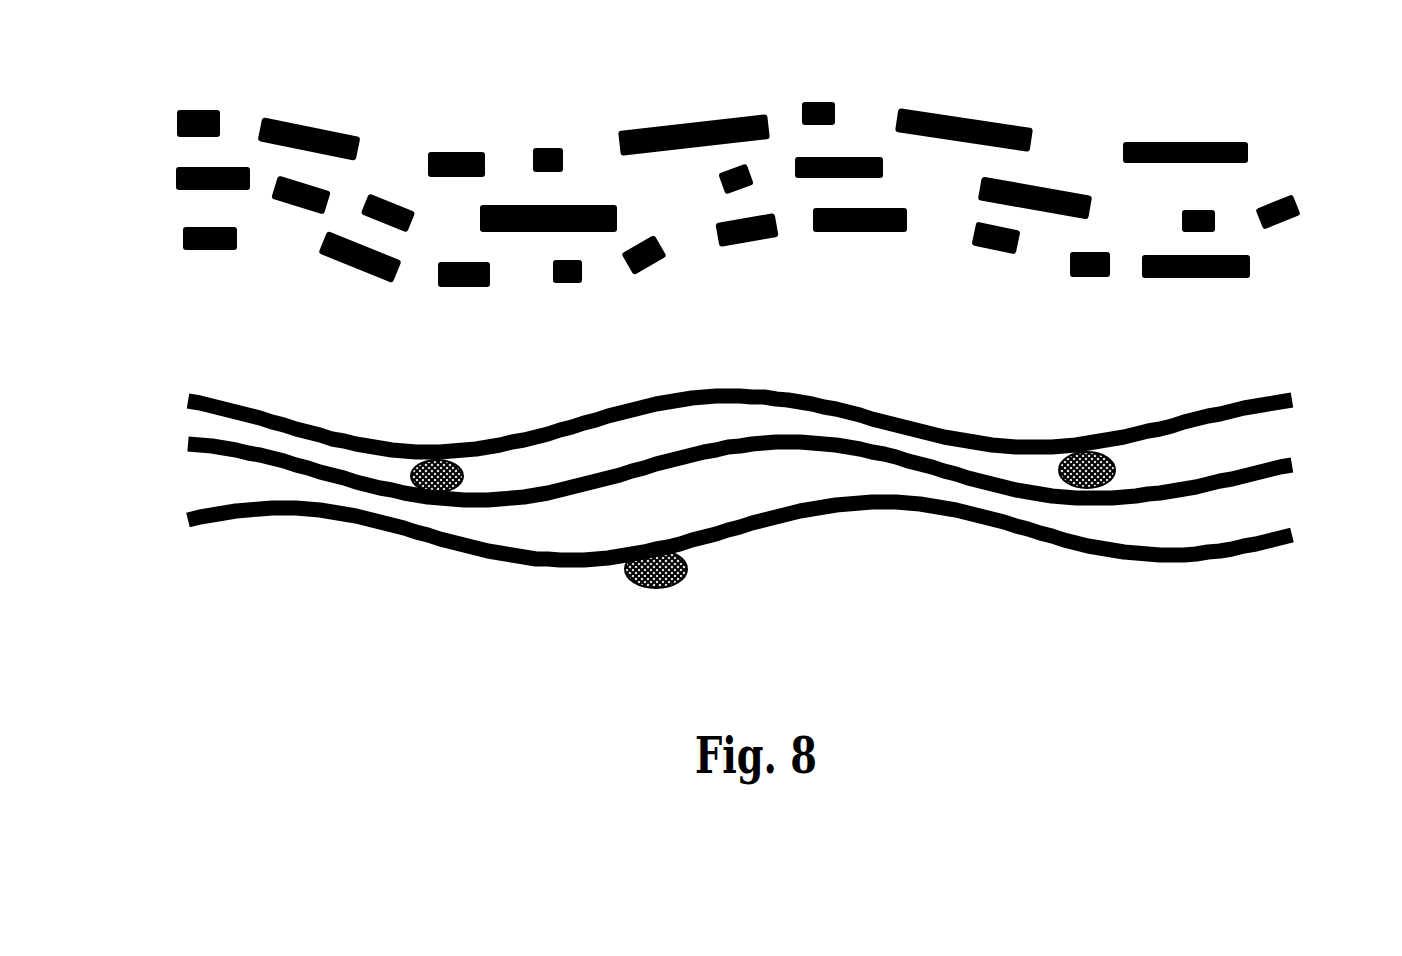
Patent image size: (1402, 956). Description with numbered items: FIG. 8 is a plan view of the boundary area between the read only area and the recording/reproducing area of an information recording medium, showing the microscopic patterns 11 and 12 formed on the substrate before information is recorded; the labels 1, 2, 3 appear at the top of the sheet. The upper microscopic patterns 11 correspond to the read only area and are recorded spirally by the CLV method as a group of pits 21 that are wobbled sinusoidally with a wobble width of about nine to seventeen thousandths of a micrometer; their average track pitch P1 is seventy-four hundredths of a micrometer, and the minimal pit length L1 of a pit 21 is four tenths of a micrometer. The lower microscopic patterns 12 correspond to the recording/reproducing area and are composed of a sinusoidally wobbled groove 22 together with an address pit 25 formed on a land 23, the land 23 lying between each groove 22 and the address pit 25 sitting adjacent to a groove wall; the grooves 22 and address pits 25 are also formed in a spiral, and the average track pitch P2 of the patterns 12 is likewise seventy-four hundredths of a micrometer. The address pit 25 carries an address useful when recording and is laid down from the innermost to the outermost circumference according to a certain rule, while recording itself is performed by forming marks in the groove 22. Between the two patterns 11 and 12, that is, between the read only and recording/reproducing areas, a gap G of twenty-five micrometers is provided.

The wire harness (first embodiment) 1 is at (1122, 70).
The wire harness (second embodiment) 2 is at (1193, 70).
The wire harness (third embodiment) 3 is at (1278, 70).
The microscopic pattern 11 is at (1295, 140).
The microscopic pattern 12 is at (793, 497).
The pit 21 is at (453, 152).
The groove 22 is at (232, 520).
The land 23 is at (183, 467).
The address pit 25 is at (462, 477).
The average track pitch P1 is at (173, 125).
The average track pitch P2 is at (187, 398).
The gap G is at (182, 237).
The minimal pit length L1 is at (581, 288).